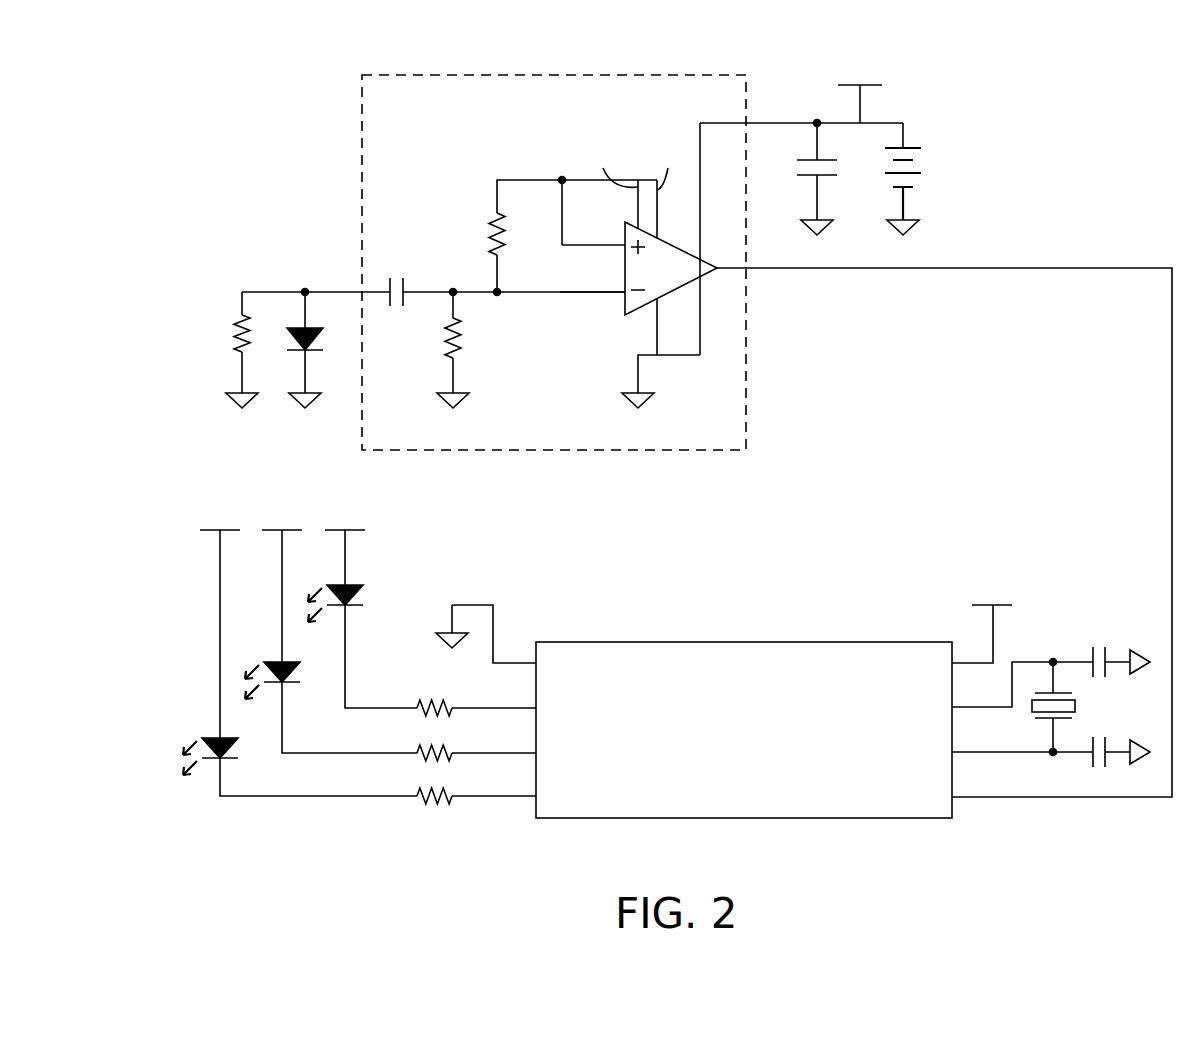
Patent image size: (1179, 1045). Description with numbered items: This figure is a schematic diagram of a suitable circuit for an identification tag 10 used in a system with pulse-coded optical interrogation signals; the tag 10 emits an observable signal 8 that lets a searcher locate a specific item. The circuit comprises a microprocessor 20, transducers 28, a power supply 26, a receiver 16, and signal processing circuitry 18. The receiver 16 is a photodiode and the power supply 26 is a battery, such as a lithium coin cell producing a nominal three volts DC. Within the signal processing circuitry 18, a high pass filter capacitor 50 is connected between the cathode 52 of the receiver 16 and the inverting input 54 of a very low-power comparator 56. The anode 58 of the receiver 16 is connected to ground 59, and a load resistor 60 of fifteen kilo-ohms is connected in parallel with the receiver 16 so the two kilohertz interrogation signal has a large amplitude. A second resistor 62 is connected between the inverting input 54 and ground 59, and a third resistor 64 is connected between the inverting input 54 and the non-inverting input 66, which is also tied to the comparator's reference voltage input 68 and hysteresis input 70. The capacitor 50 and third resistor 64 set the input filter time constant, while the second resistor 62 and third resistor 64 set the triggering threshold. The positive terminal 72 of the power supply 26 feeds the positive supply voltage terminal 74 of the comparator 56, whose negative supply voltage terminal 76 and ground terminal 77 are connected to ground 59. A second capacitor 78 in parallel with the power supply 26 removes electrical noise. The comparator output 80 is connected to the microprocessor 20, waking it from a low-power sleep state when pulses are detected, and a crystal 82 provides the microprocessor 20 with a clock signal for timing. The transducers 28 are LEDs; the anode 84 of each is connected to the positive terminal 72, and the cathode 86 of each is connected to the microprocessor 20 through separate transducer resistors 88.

The identification tag 10 is at (1097, 82).
The signal processing circuitry 18 is at (424, 132).
The receiver 16 is at (323, 332).
The microprocessor 20 is at (687, 719).
The power supply 26 is at (983, 187).
The transducers 28 is at (385, 629).
The high pass filter capacitor 50 is at (379, 292).
The cathode 52 is at (288, 309).
The inverting input 54 is at (592, 276).
The comparator 56 is at (671, 268).
The anode 58 is at (294, 379).
The ground 59 is at (450, 419).
The load resistor 60 is at (249, 348).
The second resistor 62 is at (461, 341).
The third resistor 64 is at (554, 238).
The non-inverting input 66 is at (593, 231).
The reference voltage input 68 is at (599, 193).
The hysteresis input 70 is at (666, 189).
The positive terminal 72 is at (926, 128).
The positive supply voltage terminal 74 is at (711, 222).
The negative supply voltage terminal 76 is at (694, 335).
The ground terminal 77 is at (634, 372).
The second capacitor 78 is at (801, 142).
The comparator output 80 is at (944, 512).
The crystal 82 is at (1051, 700).
The anode 84 is at (347, 559).
The cathode 86 is at (440, 656).
The transducer resistors 88 is at (458, 800).
The observable signal 8 is at (295, 651).